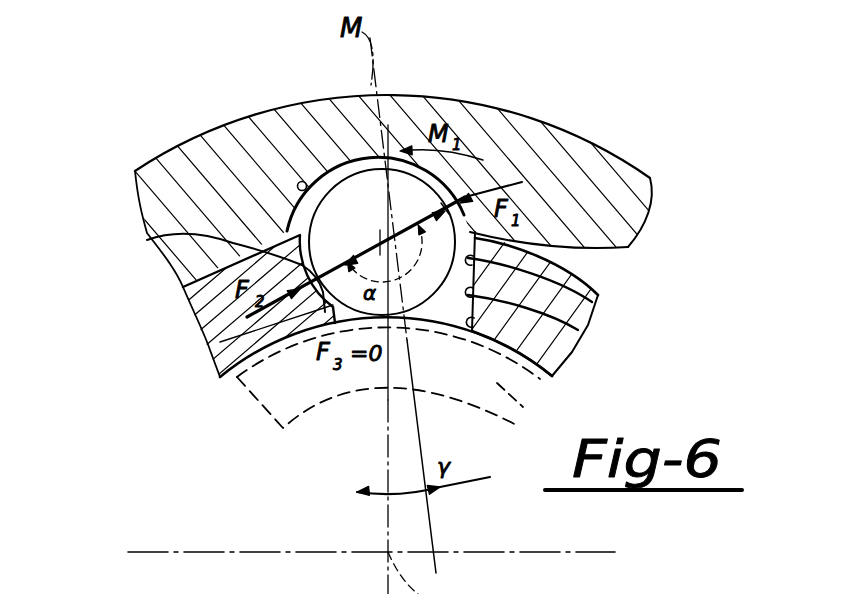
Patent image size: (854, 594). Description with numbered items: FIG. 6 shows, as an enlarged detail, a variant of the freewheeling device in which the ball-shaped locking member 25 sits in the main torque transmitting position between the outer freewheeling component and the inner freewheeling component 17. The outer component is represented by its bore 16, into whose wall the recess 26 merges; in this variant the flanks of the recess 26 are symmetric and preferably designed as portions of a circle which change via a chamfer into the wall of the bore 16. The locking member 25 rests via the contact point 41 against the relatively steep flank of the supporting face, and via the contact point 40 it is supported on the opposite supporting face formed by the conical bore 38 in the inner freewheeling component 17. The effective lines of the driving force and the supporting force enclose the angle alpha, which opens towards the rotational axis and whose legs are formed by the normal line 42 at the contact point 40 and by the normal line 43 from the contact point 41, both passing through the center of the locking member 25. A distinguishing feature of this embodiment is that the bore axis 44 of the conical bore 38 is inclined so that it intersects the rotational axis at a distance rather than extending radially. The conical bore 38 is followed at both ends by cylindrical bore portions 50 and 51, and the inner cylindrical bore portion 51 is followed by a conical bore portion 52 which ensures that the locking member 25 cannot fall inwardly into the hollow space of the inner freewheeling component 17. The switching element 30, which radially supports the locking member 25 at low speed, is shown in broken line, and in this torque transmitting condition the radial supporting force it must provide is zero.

The bore 16 is at (150, 232).
The inner freewheeling component 17 is at (553, 300).
The locking member 25 is at (343, 195).
The recess 26 is at (300, 181).
The switching element 30 is at (520, 403).
The conical bore 38 is at (575, 280).
The contact point 40 is at (226, 358).
The contact point 41 is at (437, 207).
The normal line 42 is at (192, 283).
The outer race groove surface 43 is at (447, 208).
The bore axis 44 is at (417, 428).
The cylindrical bore portion 50 is at (605, 250).
The inner cylindrical bore portion 51 is at (563, 333).
The conical bore portion 52 is at (552, 370).